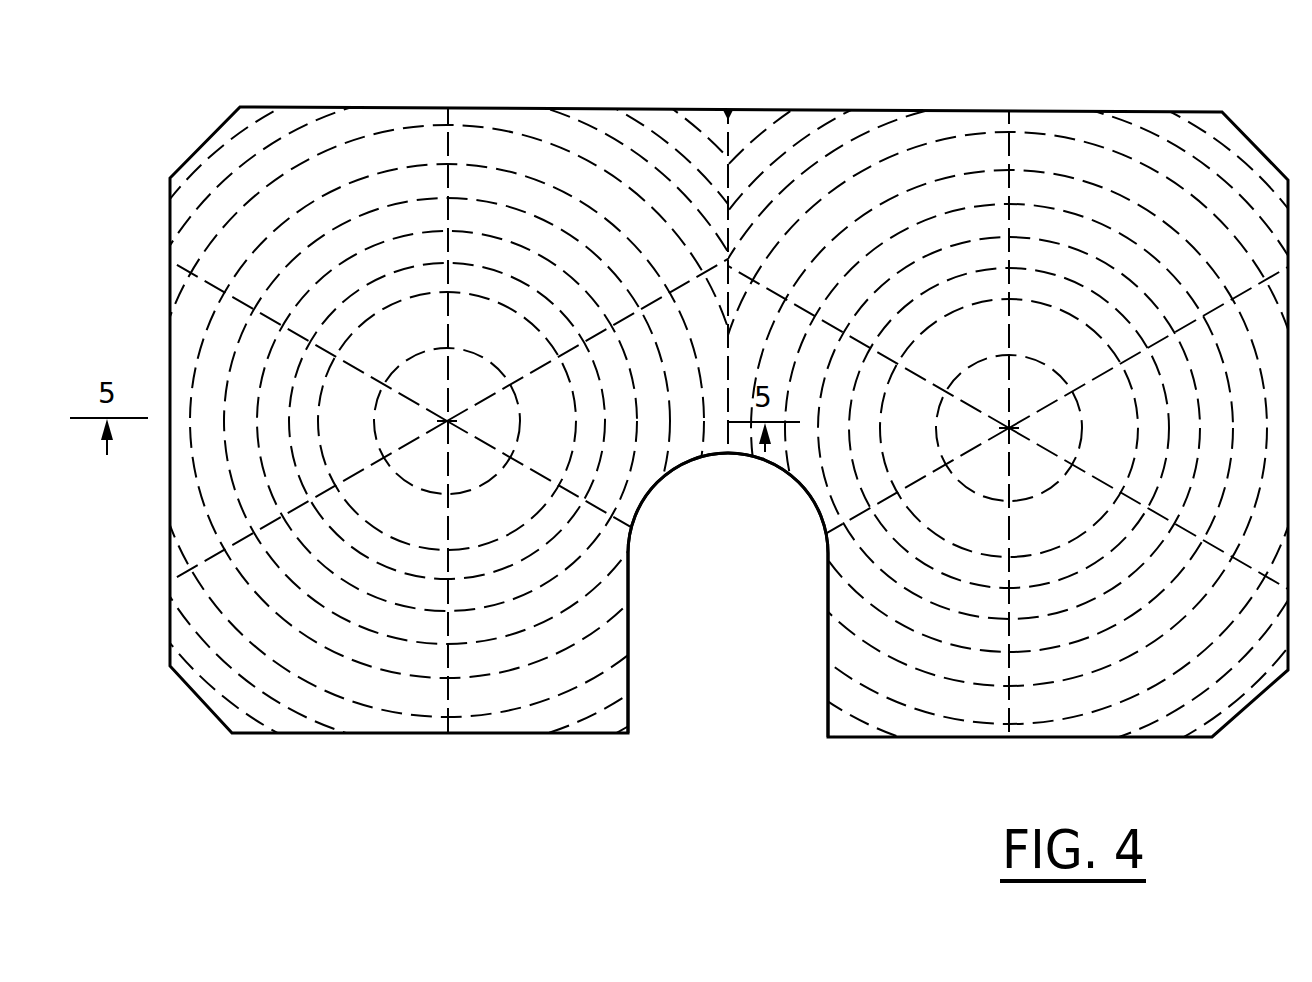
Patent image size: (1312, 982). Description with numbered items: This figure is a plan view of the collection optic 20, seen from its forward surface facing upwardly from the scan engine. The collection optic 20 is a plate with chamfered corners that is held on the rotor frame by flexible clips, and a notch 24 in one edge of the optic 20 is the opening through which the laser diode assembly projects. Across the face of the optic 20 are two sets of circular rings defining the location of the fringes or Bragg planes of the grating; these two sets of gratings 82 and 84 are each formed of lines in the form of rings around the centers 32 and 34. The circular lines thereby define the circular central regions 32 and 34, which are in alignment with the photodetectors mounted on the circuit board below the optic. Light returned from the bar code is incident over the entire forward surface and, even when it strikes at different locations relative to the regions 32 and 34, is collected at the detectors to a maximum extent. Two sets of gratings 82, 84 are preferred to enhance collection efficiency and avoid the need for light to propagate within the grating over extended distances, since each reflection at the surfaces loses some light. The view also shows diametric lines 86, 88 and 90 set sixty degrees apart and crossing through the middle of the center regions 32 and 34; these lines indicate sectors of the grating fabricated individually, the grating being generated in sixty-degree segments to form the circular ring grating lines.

The collection optic 20 is at (820, 108).
The notch 24 is at (828, 590).
The center region 32 is at (470, 374).
The center region 34 is at (1030, 374).
The grating 82 is at (447, 421).
The grating 84 is at (968, 428).
The diametric line 86 is at (728, 422).
The diametric line 88 is at (873, 421).
The diametric line 90 is at (730, 426).